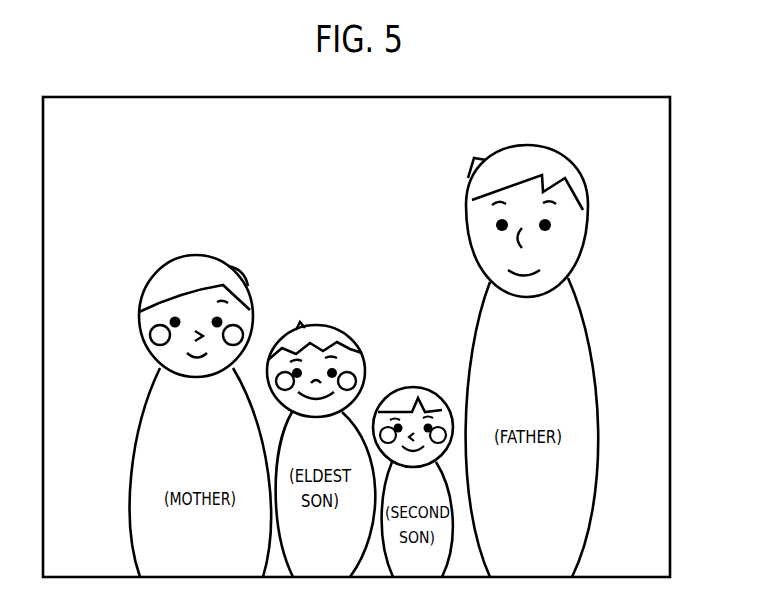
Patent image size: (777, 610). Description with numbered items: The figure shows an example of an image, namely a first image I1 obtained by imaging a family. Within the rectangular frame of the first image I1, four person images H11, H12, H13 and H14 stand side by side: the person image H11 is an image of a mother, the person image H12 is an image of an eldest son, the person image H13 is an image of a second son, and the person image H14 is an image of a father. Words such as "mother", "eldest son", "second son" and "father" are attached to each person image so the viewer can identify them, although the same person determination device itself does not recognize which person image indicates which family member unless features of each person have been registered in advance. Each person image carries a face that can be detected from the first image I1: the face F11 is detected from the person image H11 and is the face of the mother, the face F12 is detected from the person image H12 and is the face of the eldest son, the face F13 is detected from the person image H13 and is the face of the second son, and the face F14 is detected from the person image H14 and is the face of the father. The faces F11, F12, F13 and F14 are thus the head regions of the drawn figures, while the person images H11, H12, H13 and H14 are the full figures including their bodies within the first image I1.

The first image I1 is at (670, 382).
The face F11 is at (204, 253).
The person image H11 is at (168, 251).
The face F12 is at (339, 326).
The person image H12 is at (316, 321).
The face F13 is at (427, 388).
The person image H13 is at (413, 383).
The face F14 is at (466, 172).
The person image H14 is at (585, 172).